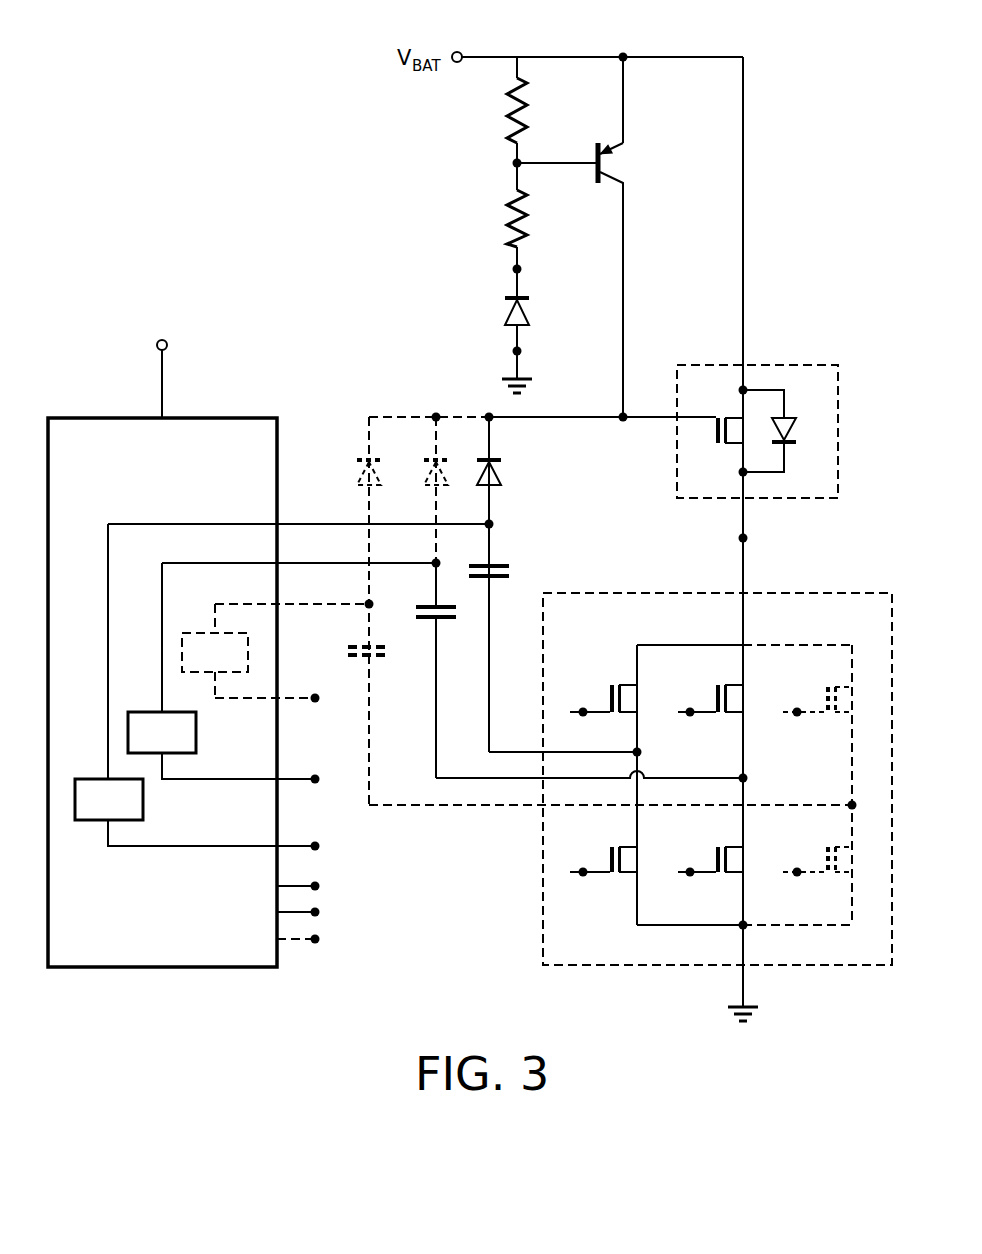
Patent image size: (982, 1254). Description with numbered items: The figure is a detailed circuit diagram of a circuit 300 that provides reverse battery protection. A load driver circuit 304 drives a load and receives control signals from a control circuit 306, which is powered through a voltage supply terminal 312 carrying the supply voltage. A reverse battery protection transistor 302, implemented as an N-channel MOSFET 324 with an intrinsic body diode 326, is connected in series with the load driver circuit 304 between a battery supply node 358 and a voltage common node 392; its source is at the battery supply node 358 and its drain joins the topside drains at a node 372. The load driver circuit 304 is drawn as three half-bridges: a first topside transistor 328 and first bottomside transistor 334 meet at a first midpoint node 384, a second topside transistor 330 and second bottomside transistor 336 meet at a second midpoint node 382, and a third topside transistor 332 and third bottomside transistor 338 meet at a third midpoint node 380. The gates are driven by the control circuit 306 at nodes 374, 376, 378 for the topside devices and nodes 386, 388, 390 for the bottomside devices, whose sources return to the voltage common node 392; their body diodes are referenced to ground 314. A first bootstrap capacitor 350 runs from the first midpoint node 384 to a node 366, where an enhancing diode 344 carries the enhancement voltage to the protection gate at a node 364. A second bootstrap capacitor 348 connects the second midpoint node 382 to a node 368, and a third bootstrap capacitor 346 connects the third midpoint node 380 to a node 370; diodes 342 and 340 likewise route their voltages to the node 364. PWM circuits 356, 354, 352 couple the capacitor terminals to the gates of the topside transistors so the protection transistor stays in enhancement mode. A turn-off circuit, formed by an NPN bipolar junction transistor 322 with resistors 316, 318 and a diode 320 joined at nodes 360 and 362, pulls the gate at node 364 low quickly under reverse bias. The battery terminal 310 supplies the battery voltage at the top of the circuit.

The circuit 300 is at (219, 52).
The reverse battery protection transistor 302 is at (689, 365).
The load driver circuit 304 is at (620, 592).
The control circuit 306 is at (90, 416).
The battery voltage terminal 310 is at (458, 52).
The voltage supply terminal 312 is at (163, 339).
The ground 314 is at (502, 380).
The resistor 316 is at (509, 112).
The resistor 318 is at (509, 222).
The diode 320 is at (505, 315).
The turn-off transistor 322 is at (606, 166).
The N-channel MOSFET 324 is at (714, 416).
The intrinsic body diode 326 is at (798, 416).
The first topside transistor 328 is at (615, 688).
The second topside transistor 330 is at (726, 716).
The third topside transistor 332 is at (836, 716).
The first bottomside transistor 334 is at (620, 876).
The second bottomside transistor 336 is at (726, 876).
The third bottomside transistor 338 is at (836, 876).
The third diode 340 is at (356, 472).
The diode 342 is at (424, 466).
The enhancing diode 344 is at (502, 470).
The third bootstrap capacitor 346 is at (382, 660).
The second bootstrap capacitor 348 is at (456, 620).
The first bootstrap capacitor 350 is at (510, 578).
The PWM circuit 352 is at (200, 632).
The PWM circuit 354 is at (146, 712).
The PWM circuit 356 is at (90, 779).
The battery supply node 358 is at (623, 52).
The node 360 is at (512, 163).
The node 362 is at (522, 269).
The node 364 is at (623, 423).
The node 366 is at (494, 523).
The node 368 is at (432, 560).
The node 370 is at (365, 600).
The node 372 is at (738, 538).
The node 374 is at (580, 706).
The node 376 is at (687, 706).
The node 378 is at (794, 706).
The third midpoint node 380 is at (850, 800).
The second midpoint node 382 is at (746, 776).
The first midpoint node 384 is at (641, 750).
The node 386 is at (580, 866).
The node 388 is at (687, 866).
The node 390 is at (794, 866).
The voltage common node 392 is at (522, 351).